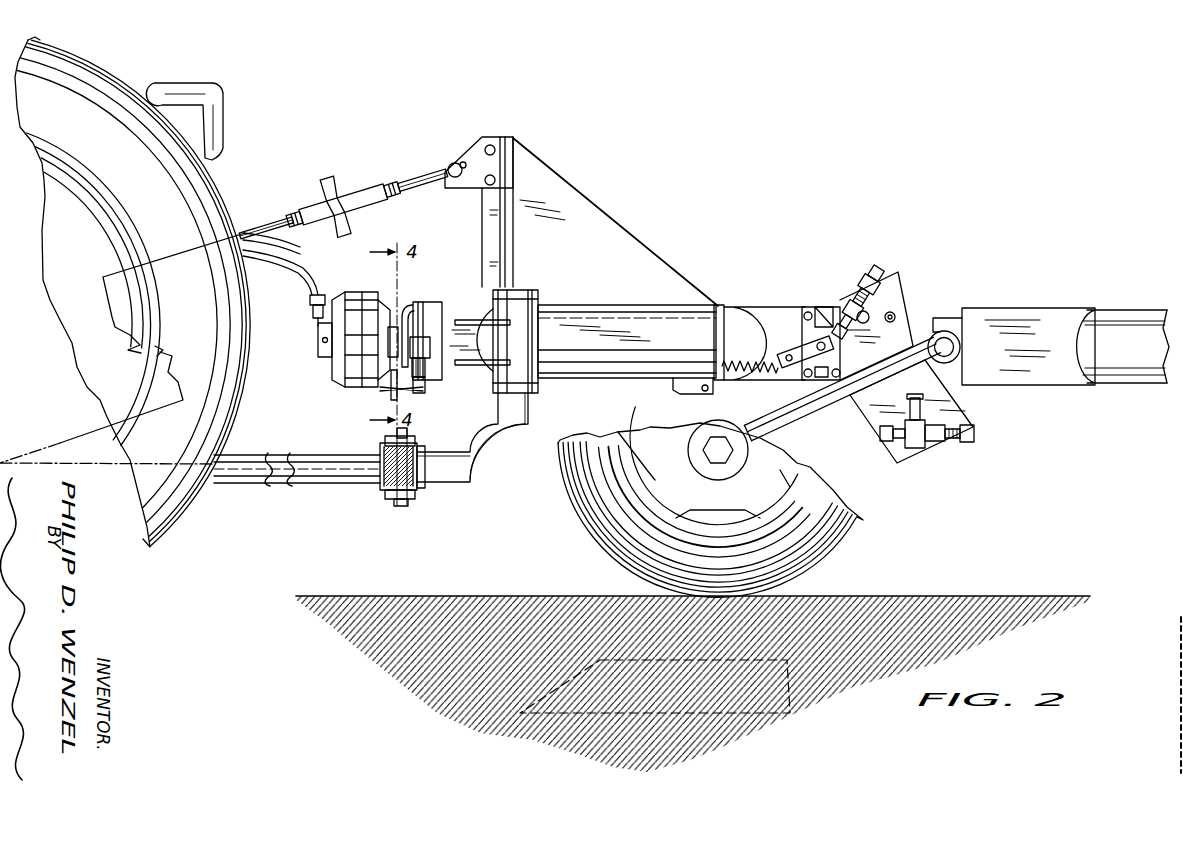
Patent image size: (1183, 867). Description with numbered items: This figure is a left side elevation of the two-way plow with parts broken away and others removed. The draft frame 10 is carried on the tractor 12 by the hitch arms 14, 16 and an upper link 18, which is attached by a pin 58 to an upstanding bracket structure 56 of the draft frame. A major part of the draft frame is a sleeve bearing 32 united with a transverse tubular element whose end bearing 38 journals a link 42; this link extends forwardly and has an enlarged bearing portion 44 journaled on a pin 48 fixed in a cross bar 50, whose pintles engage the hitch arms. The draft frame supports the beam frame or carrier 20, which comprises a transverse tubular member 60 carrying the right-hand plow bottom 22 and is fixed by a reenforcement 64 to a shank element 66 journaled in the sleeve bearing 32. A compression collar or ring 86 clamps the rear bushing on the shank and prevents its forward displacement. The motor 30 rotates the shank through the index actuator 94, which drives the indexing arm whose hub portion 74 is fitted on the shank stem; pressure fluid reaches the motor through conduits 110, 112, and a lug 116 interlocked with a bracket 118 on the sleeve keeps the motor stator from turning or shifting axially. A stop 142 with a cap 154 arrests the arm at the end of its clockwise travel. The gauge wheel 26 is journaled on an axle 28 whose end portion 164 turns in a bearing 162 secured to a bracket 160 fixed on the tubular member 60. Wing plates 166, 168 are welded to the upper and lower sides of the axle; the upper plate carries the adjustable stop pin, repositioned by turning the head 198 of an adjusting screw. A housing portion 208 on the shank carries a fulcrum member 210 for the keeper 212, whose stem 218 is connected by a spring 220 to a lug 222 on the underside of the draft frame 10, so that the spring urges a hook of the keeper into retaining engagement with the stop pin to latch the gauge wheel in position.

The draft frame 10 is at (662, 215).
The tractor 12 is at (250, 94).
The hitch arm 14 is at (286, 462).
The hitch arm 16 is at (330, 481).
The upper link 18 is at (367, 190).
The beam frame or carrier 20 is at (1117, 310).
The right-hand plow bottom 22 is at (823, 587).
The gauge wheel 26 is at (597, 527).
The axle 28 is at (802, 414).
The motor 30 is at (340, 380).
The sleeve bearing 32 is at (682, 318).
The bearing 38 is at (518, 374).
The link 42 is at (490, 476).
The enlarged bearing portion 44 is at (396, 475).
The pin 48 is at (403, 507).
The cross bar 50 is at (418, 438).
The upstanding bracket structure 56 is at (570, 202).
The pin 58 is at (454, 163).
The transverse tubular member 60 is at (1120, 363).
The reenforcement 64 is at (805, 305).
The shank element 66 is at (742, 312).
The hub portion 74 is at (420, 302).
The compression collar or ring 86 is at (720, 310).
The index actuator 94 is at (407, 300).
The conduit 110 is at (288, 247).
The conduit 112 is at (318, 288).
The lug 116 is at (396, 405).
The bracket 118 is at (390, 396).
The stop 142 is at (422, 337).
The cap 154 is at (428, 388).
The bracket 160 is at (1027, 370).
The bearing 162 is at (942, 335).
The end portion 164 is at (960, 333).
The wing plate 166 is at (905, 275).
The wing plate 168 is at (972, 430).
The head 198 is at (882, 272).
The housing portion 208 is at (815, 310).
The fulcrum member 210 is at (800, 368).
The keeper 212 is at (853, 269).
The stem 218 is at (745, 325).
The spring 220 is at (732, 385).
The lug 222 is at (690, 393).